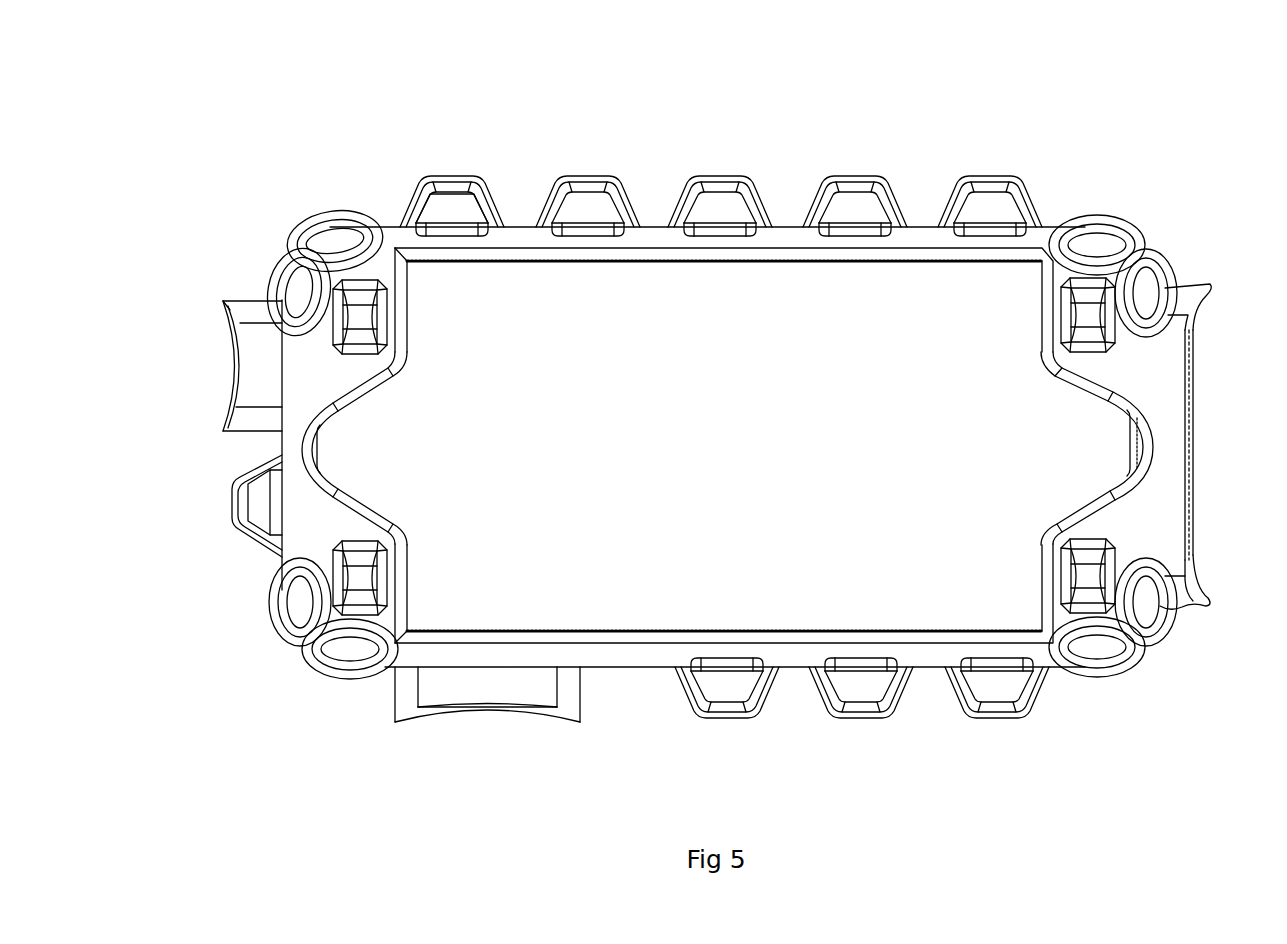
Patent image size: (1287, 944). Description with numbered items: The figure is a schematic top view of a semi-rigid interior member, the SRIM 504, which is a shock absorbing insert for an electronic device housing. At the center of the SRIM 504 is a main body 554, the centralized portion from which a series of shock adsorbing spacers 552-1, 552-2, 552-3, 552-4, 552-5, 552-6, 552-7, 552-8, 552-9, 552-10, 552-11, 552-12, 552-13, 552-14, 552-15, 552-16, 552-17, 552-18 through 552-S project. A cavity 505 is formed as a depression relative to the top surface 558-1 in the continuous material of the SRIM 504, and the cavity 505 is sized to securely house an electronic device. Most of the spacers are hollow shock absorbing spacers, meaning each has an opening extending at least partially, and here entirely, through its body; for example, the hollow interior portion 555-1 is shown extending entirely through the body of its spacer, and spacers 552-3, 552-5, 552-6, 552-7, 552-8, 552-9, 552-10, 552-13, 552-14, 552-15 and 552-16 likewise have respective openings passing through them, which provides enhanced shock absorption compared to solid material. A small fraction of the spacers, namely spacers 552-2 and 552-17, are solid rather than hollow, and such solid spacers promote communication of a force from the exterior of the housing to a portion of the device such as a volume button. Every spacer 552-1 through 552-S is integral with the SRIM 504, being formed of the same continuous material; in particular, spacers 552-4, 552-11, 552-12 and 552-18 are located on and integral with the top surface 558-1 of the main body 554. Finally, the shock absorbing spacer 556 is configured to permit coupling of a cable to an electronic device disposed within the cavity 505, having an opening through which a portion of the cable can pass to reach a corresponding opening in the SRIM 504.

The semi-rigid interior member (SRIM) 504 is at (247, 103).
The cavity 505 is at (727, 445).
The shock absorbing spacer 552-1 is at (228, 494).
The shock absorbing spacer 552-2 is at (258, 335).
The shock absorbing spacer 552-3 is at (335, 222).
The shock absorbing spacer 552-4 is at (360, 287).
The shock absorbing spacer 552-5 is at (455, 176).
The shock absorbing spacer 552-6 is at (590, 176).
The shock absorbing spacer 552-7 is at (724, 176).
The shock absorbing spacer 552-8 is at (858, 176).
The shock absorbing spacer 552-9 is at (994, 176).
The shock absorbing spacer 552-10 is at (1100, 240).
The shock absorbing spacer 552-11 is at (1090, 292).
The shock absorbing spacer 552-12 is at (1115, 560).
The shock absorbing spacer 552-13 is at (1130, 648).
The shock absorbing spacer 552-14 is at (1022, 720).
The shock absorbing spacer 552-15 is at (870, 720).
The shock absorbing spacer 552-16 is at (733, 720).
The shock absorbing spacer 552-17 is at (480, 690).
The shock absorbing spacer 552-18 is at (352, 600).
The shock absorbing spacer 552-S is at (300, 600).
The main body 554 is at (1172, 390).
The hollow interior portion 555-1 is at (458, 208).
The shock absorbing spacer 556 is at (1194, 442).
The top surface 558-1 is at (305, 376).